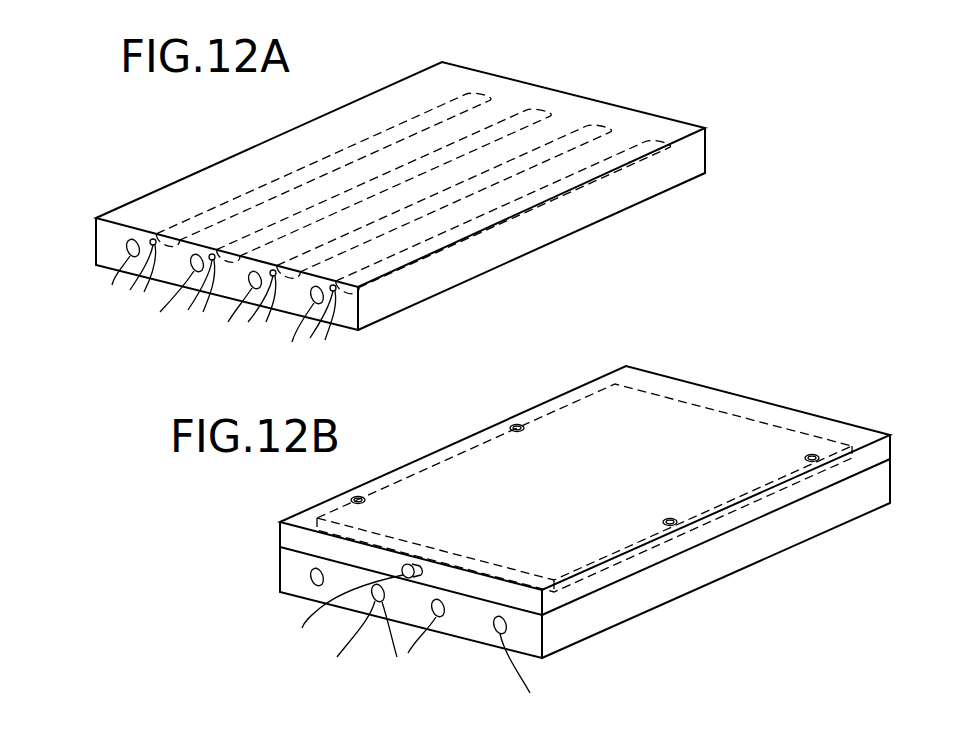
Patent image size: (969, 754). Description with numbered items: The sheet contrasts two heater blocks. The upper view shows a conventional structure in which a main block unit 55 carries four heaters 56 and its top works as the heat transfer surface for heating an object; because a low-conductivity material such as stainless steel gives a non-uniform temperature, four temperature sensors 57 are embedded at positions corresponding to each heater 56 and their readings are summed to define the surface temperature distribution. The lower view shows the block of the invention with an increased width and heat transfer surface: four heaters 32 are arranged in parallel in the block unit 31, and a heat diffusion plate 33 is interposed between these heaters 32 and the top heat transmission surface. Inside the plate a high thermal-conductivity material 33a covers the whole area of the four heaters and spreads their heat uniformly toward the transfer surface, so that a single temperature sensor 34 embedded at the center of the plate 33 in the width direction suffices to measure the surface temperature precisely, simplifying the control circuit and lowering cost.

In FIG. 12A, the main block unit 55 is at (245, 165).
In FIG. 12A, the heaters 56 is at (126, 252).
In FIG. 12A, the temperature sensors 57 is at (180, 237).
In FIG. 12B, the block unit 31 is at (720, 565).
In FIG. 12B, the heaters 32 is at (311, 578).
In FIG. 12B, the heat diffusion plate 33 is at (688, 388).
In FIG. 12B, the high thermal-conductivity material 33a is at (758, 422).
In FIG. 12B, the temperature sensor 34 is at (428, 562).